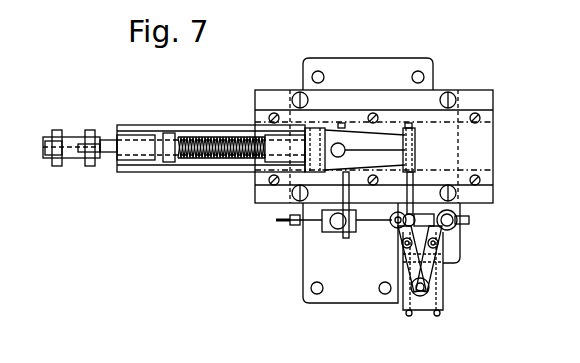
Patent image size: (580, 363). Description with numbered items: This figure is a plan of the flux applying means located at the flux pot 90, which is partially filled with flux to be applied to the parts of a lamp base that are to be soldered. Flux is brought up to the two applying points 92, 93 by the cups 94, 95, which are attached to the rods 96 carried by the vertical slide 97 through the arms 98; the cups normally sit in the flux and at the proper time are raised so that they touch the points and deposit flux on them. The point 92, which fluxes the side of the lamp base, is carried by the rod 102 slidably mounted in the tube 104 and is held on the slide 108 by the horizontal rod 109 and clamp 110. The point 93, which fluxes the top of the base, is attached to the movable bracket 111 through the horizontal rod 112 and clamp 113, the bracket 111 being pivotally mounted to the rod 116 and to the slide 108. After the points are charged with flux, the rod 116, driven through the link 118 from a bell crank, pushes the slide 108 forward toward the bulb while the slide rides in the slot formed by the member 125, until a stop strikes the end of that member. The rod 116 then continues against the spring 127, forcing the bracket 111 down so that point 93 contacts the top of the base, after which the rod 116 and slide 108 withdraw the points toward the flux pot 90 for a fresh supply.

The flux pot 90 is at (446, 243).
The point 92 is at (398, 212).
The point 93 is at (458, 220).
The cup 94 is at (414, 222).
The cup 95 is at (452, 212).
The rod 96 is at (444, 256).
The vertical slide 97 is at (408, 300).
The arm 98 is at (407, 262).
The rod 102 is at (284, 223).
The tube 104 is at (324, 228).
The slide 108 is at (214, 170).
The horizontal rod 109 is at (348, 197).
The clamp 110 is at (346, 235).
The movable bracket 111 is at (416, 152).
The horizontal rod 112 is at (414, 178).
The clamp 113 is at (440, 196).
The rod 116 is at (106, 140).
The link 118 is at (73, 160).
The member 125 is at (262, 198).
The spring 127 is at (205, 140).